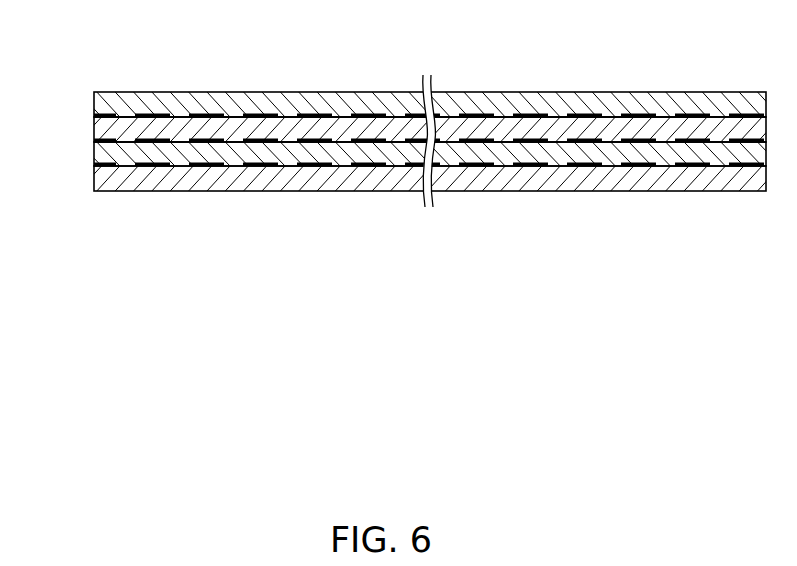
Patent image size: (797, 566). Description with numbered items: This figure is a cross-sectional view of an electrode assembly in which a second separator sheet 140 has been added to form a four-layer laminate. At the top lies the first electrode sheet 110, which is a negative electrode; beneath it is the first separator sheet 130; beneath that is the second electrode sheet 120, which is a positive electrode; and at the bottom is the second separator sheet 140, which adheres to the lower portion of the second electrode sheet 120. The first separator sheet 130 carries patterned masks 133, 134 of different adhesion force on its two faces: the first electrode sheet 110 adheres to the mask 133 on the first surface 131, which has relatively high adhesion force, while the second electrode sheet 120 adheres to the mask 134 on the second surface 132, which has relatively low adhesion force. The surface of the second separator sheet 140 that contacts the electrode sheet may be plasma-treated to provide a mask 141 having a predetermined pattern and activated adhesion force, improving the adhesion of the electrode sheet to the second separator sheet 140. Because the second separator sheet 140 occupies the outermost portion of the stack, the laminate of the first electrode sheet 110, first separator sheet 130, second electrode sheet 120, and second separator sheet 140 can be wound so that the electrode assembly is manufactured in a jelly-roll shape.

The first electrode sheet 110 is at (94, 103).
The second electrode sheet 120 is at (94, 154).
The first separator sheet 130 is at (94, 132).
The second separator sheet 140 is at (94, 187).
The first surface 131 is at (143, 113).
The second surface 132 is at (258, 142).
The patterned mask 133 is at (180, 117).
The patterned mask 134 is at (288, 145).
The mask 141 is at (180, 168).